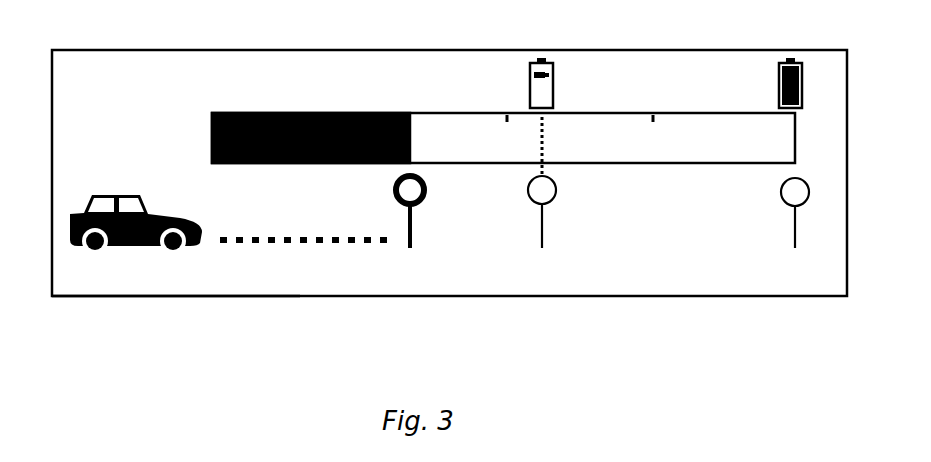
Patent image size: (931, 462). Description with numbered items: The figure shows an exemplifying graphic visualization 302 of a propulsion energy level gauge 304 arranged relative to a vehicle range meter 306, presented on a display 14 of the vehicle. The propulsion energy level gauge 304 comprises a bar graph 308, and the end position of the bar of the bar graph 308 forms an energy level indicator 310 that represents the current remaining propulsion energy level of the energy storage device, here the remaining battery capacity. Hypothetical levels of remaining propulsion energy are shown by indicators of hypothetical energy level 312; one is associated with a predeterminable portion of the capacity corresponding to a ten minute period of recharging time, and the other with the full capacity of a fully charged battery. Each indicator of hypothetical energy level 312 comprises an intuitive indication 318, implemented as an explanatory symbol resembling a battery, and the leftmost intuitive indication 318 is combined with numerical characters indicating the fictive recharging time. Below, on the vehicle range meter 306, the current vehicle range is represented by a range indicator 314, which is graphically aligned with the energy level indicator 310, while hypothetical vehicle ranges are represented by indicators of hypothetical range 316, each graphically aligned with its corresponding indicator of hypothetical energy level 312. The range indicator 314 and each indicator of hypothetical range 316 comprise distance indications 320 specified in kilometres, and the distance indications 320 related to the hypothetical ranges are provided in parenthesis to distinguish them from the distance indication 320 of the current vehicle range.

The display 14 is at (163, 296).
The graphic visualization 302 is at (88, 65).
The propulsion energy level gauge 304 is at (300, 97).
The vehicle range meter 306 is at (308, 258).
The bar graph 308 is at (193, 110).
The energy level indicator 310 is at (412, 137).
The indicator of hypothetical energy level 312 is at (558, 98).
The range indicator 314 is at (410, 300).
The indicator of hypothetical range 316 is at (542, 300).
The intuitive indication 318 is at (530, 68).
The distance indication 320 is at (384, 284).